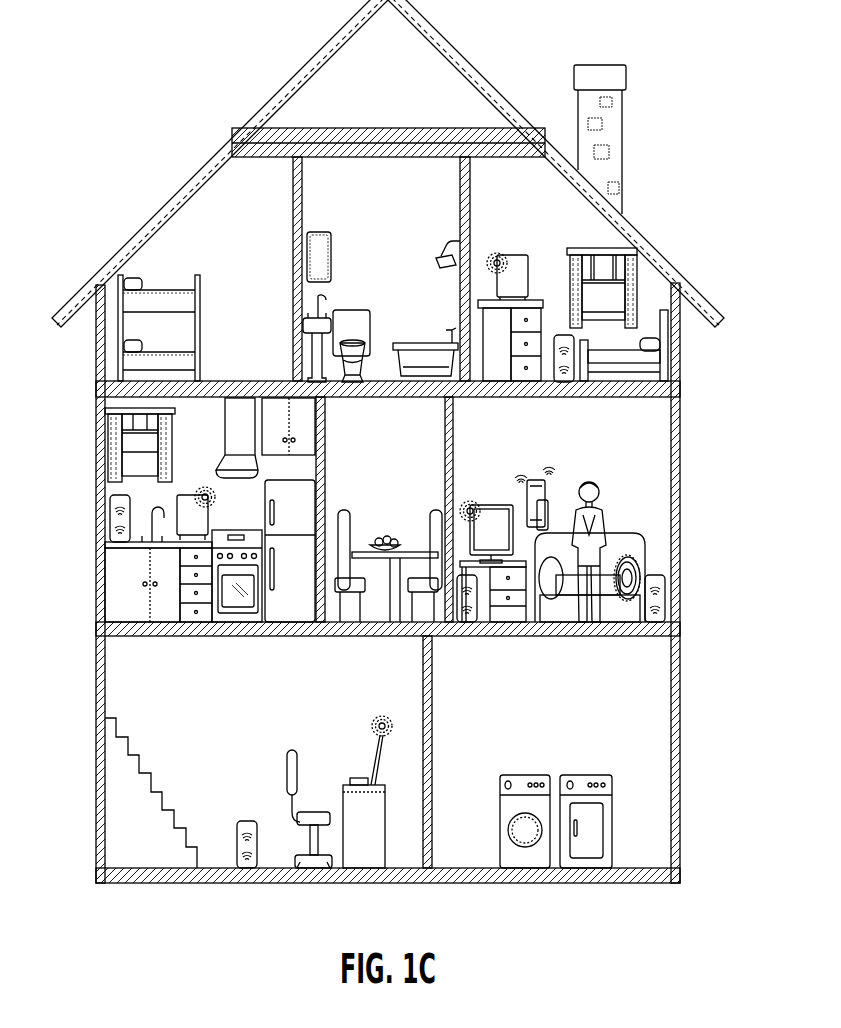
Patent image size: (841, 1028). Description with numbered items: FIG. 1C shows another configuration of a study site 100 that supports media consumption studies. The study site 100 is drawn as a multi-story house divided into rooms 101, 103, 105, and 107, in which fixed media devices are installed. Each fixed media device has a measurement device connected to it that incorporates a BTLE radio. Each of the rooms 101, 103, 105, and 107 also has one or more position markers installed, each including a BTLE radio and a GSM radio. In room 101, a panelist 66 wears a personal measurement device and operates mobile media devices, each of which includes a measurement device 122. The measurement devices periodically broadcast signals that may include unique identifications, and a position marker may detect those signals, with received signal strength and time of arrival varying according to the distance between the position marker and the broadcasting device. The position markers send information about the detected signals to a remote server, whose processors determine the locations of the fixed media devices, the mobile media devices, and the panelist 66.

The study site 100 is at (160, 71).
The room 101 is at (669, 428).
The room 103 is at (213, 433).
The room 105 is at (515, 199).
The room 107 is at (154, 675).
The measurement device 122 is at (520, 473).
The panelist 66 is at (587, 482).